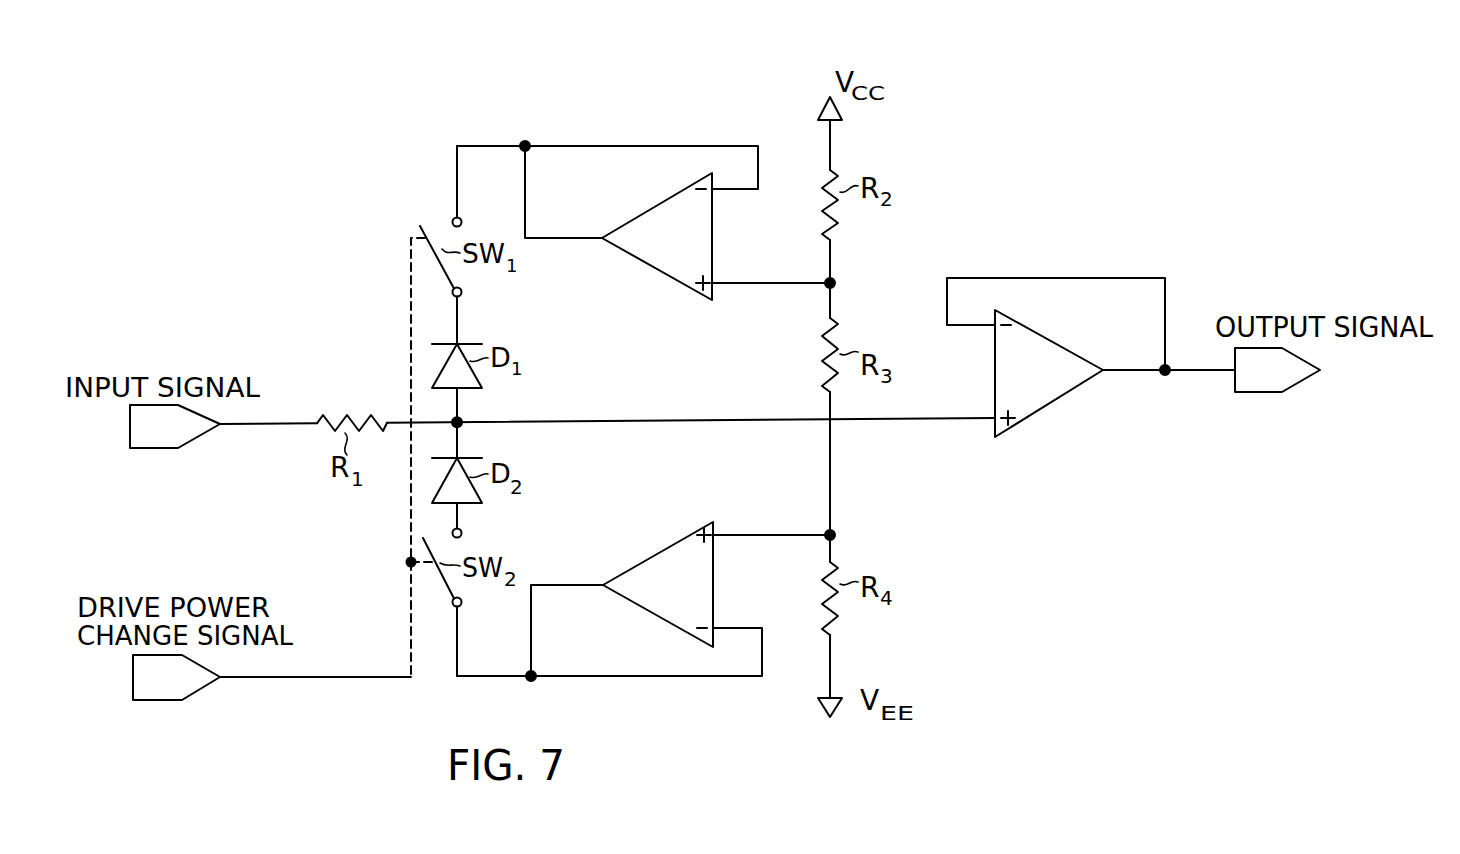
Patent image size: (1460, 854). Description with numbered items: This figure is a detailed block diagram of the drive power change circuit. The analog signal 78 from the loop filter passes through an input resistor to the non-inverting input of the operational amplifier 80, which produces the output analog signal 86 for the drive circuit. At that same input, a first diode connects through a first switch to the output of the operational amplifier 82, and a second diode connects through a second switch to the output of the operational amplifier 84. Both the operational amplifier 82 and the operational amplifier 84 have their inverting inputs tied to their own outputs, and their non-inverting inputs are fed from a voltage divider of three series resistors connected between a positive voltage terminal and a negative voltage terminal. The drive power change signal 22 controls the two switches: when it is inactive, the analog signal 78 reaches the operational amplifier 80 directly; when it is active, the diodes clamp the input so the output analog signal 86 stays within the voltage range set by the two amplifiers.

The drive power change signal 22 is at (133, 689).
The analog signal 78 is at (130, 436).
The operational amplifier 80 is at (1040, 411).
The operational amplifier 82 is at (652, 267).
The operational amplifier 84 is at (655, 556).
The output analog signal 86 is at (1264, 393).